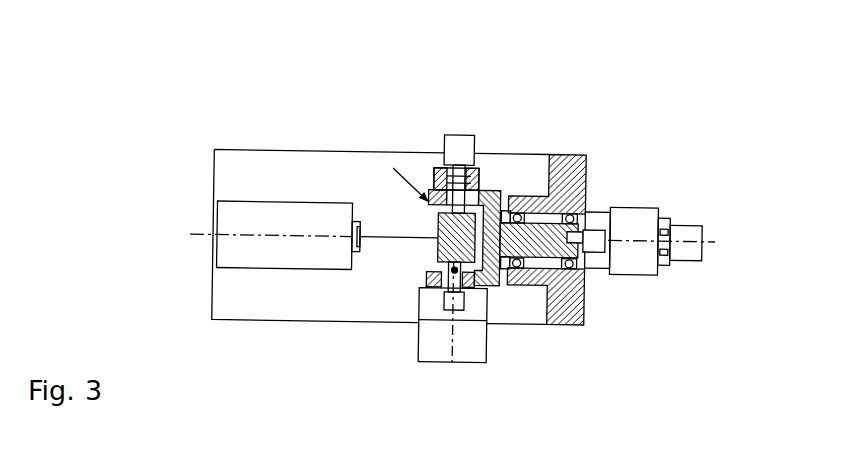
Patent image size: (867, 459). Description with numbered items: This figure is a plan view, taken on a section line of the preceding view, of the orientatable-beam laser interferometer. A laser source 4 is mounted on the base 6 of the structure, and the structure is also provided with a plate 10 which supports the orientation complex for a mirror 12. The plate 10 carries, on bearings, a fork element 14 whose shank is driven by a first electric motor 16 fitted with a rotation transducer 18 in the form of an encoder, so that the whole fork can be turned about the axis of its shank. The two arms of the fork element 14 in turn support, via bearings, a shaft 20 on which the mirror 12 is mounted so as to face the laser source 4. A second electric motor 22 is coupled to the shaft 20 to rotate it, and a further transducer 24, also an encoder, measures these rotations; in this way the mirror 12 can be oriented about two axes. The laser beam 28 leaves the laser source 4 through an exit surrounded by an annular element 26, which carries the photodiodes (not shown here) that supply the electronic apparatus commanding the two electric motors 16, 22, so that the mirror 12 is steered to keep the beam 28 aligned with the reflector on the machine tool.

The laser source 4 is at (283, 222).
The base 6 is at (243, 313).
The plate 10 is at (570, 311).
The mirror 12 is at (444, 246).
The fork element 14 is at (550, 232).
The first electric motor 16 is at (632, 217).
The rotation transducer 18 is at (686, 230).
The shaft 20 is at (428, 305).
The second electric motor 22 is at (476, 348).
The transducer 24 is at (463, 145).
The annular element 26 is at (357, 222).
The laser beam 28 is at (397, 238).